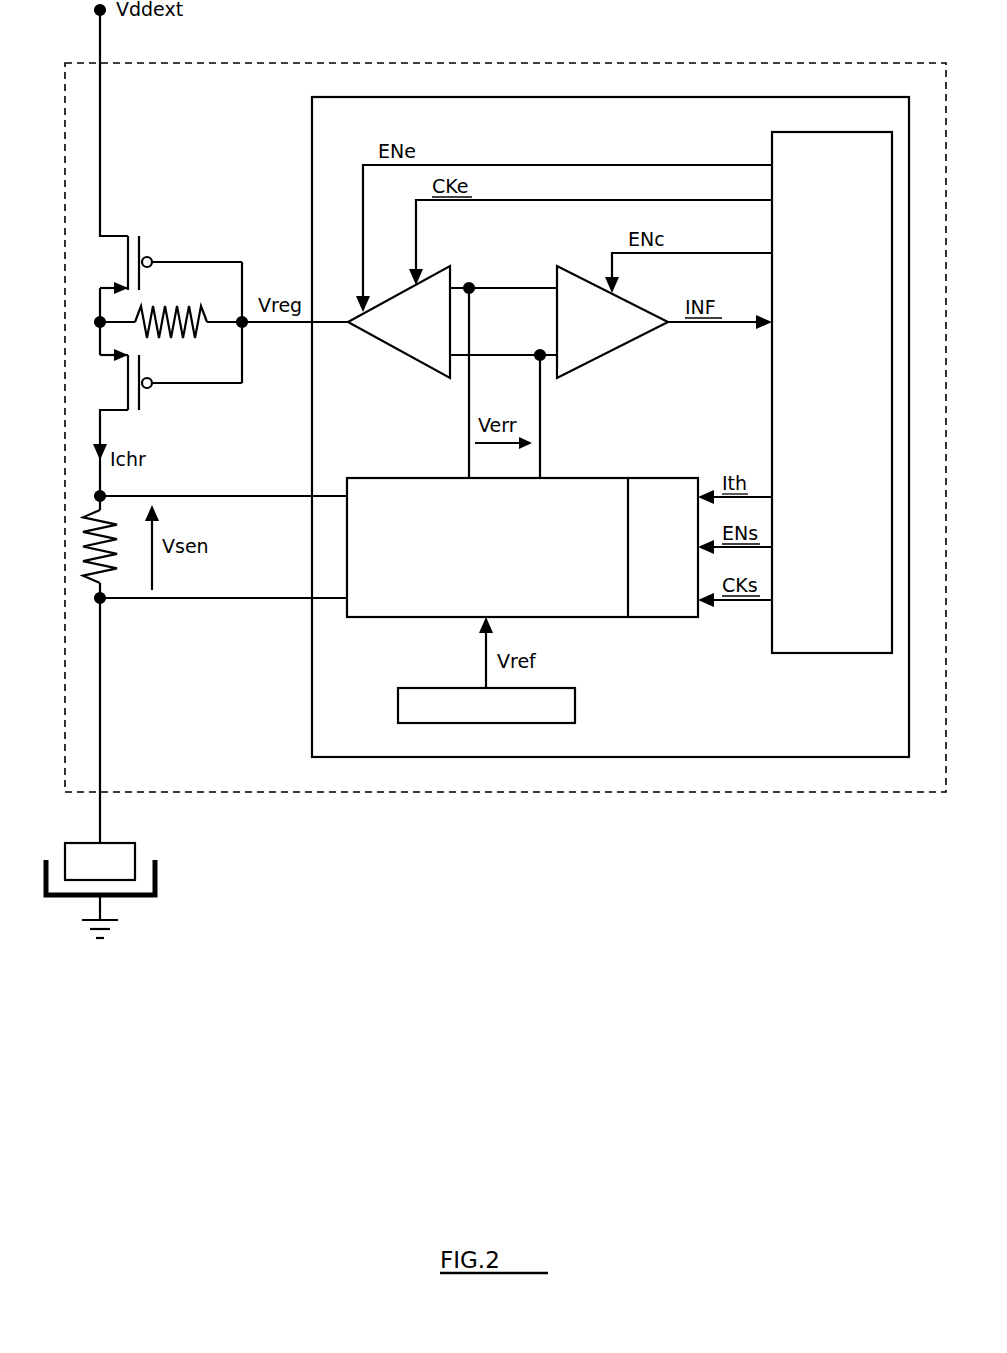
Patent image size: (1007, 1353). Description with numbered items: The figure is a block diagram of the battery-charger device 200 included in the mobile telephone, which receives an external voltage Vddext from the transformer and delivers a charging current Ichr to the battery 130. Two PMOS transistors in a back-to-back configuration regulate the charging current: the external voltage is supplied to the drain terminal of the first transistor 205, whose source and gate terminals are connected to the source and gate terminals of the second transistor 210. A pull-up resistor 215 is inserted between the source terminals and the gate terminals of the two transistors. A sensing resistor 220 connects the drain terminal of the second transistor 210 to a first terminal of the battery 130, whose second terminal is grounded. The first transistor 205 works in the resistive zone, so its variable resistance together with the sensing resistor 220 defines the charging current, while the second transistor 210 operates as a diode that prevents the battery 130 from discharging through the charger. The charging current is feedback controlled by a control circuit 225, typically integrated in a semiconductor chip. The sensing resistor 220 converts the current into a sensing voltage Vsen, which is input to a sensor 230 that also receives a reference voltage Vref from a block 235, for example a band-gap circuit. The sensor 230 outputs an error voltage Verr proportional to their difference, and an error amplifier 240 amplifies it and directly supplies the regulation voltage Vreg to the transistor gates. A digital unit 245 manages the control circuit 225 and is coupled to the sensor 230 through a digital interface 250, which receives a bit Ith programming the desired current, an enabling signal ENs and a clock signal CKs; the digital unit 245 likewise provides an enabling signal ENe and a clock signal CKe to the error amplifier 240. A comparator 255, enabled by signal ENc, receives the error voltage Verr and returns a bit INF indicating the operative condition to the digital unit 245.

The battery-charger device 200 is at (505, 396).
The first transistor 205 is at (171, 233).
The second transistor 210 is at (171, 400).
The pull-up resistor 215 is at (193, 280).
The sensing resistor 220 is at (155, 568).
The control circuit 225 is at (553, 427).
The sensor 230 is at (514, 572).
The block 235 is at (536, 699).
The error amplifier 240 is at (390, 339).
The digital unit 245 is at (832, 423).
The digital interface 250 is at (686, 515).
The comparator 255 is at (577, 300).
The battery 130 is at (154, 890).